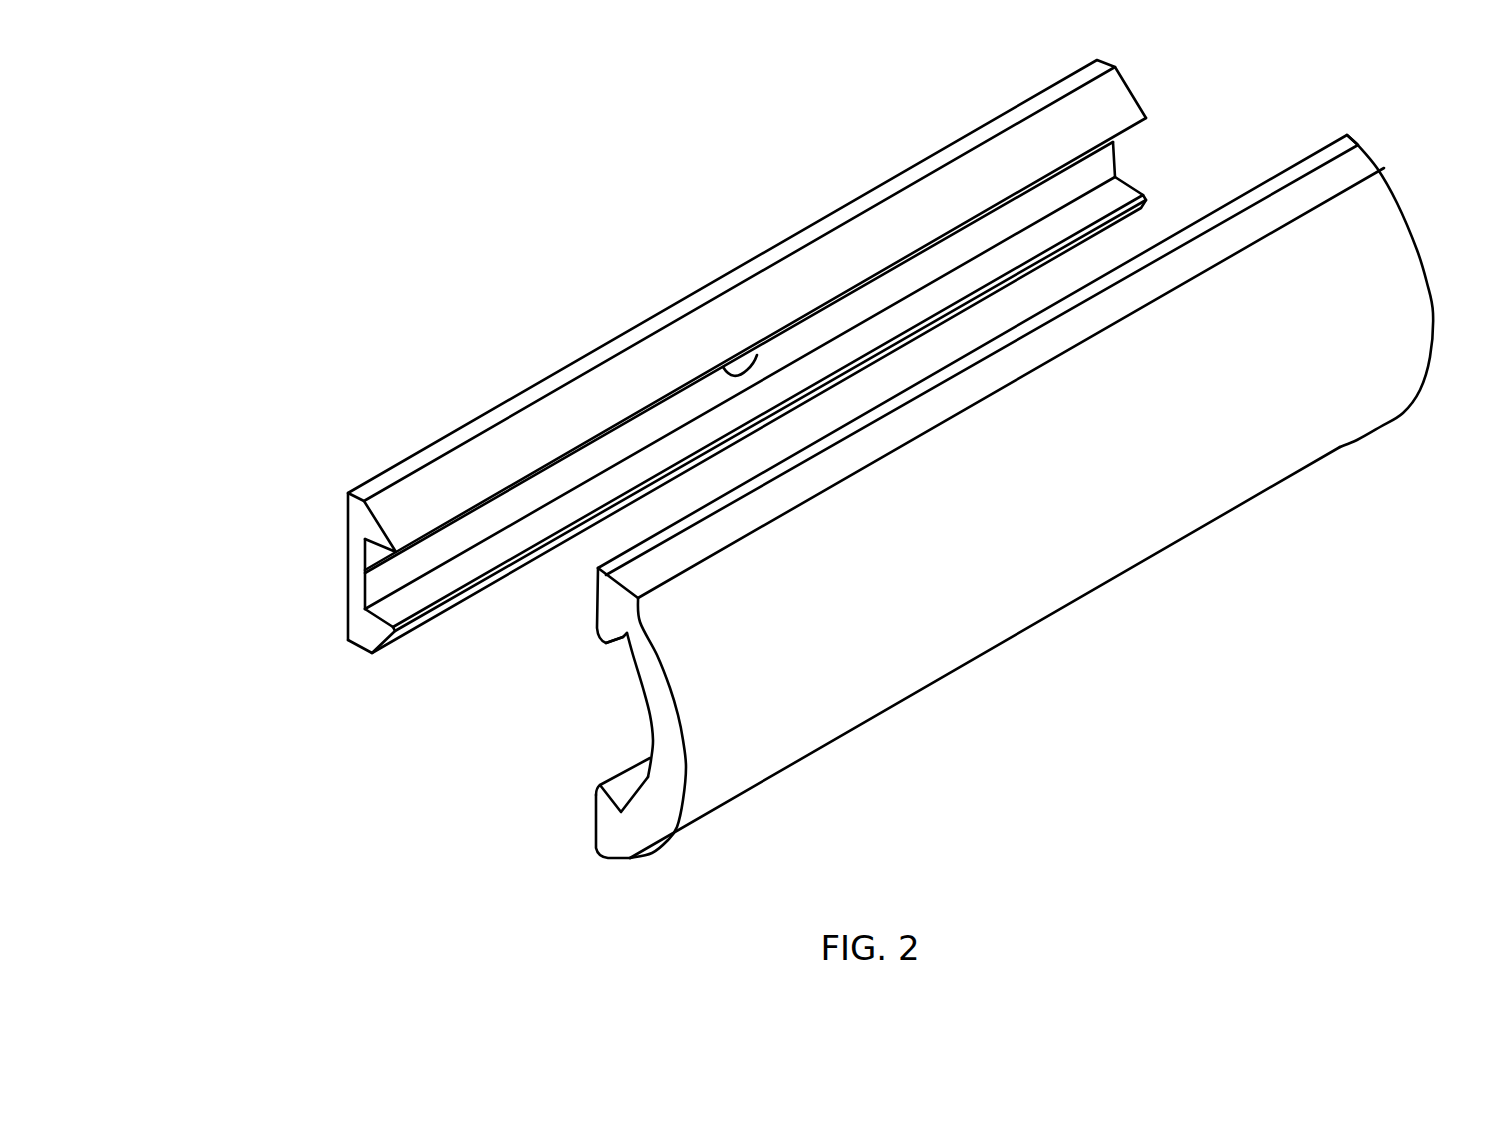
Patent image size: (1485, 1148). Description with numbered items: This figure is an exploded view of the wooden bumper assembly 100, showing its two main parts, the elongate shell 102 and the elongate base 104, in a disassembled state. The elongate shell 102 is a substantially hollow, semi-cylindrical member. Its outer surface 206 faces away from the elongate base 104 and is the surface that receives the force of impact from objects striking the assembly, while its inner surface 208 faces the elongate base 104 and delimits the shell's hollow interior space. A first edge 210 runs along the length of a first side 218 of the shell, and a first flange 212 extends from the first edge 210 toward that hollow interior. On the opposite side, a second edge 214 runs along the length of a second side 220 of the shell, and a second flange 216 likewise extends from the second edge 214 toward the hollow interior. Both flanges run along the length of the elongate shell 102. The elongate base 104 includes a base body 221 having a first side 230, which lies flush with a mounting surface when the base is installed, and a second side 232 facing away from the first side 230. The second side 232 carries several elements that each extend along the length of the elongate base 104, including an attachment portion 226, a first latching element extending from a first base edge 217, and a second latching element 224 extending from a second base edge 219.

The wooden bumper assembly 100 is at (799, 152).
The elongate shell 102 is at (1120, 578).
The elongate base 104 is at (352, 545).
The outer surface 206 is at (940, 612).
The inner surface 208 is at (648, 718).
The first edge 210 is at (600, 586).
The first flange 212 is at (615, 638).
The second edge 214 is at (600, 842).
The second flange 216 is at (617, 812).
The first base edge 217 is at (402, 458).
The first side 218 is at (1212, 166).
The second base edge 219 is at (353, 612).
The second side 220 is at (873, 780).
The base body 221 is at (350, 598).
The second latching element 224 is at (377, 637).
The attachment portion 226 is at (391, 584).
The first side 230 is at (350, 527).
The second side 232 is at (383, 575).